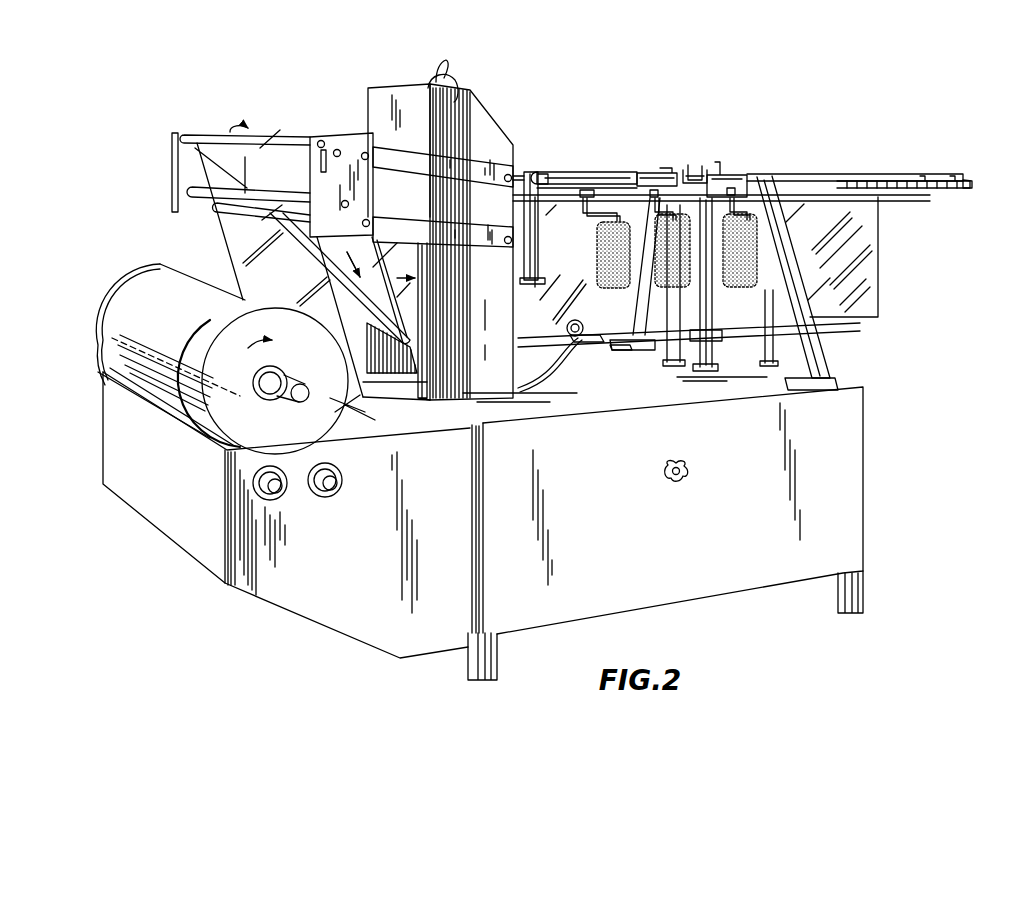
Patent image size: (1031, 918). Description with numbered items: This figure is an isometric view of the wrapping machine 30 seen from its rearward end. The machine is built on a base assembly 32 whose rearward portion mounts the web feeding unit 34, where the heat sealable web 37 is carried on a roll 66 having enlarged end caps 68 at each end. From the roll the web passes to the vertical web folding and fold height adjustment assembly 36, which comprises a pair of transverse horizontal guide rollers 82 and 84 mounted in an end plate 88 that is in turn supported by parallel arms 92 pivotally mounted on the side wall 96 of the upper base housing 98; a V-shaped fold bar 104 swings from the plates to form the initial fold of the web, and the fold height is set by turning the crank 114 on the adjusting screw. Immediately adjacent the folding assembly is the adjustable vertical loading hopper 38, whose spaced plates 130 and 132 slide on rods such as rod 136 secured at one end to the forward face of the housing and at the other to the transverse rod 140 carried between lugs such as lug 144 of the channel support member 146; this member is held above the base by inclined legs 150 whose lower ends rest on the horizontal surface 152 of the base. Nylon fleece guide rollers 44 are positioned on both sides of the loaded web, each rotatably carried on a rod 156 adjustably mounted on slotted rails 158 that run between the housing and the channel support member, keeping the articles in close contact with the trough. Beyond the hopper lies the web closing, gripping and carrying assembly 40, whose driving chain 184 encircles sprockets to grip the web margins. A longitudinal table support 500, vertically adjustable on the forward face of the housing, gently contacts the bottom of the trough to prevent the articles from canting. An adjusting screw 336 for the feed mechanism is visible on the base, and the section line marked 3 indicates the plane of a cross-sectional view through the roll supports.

The wrapping machine 30 is at (882, 356).
The base assembly 32 is at (602, 537).
The web feeding unit 34 is at (149, 258).
The vertical web folding and fold height adjustment assembly 36 is at (338, 122).
The web 37 is at (297, 218).
The adjustable vertical loading hopper 38 is at (578, 168).
The web closing, gripping and carrying assembly 40 is at (851, 170).
The nylon fleece guide rollers 44 is at (620, 272).
The roll 66 is at (135, 307).
The end caps 68 is at (124, 286).
The guide roller 82 is at (200, 205).
The guide roller 84 is at (210, 134).
The end plate 88 is at (172, 166).
The parallel arms 92 is at (440, 204).
The side wall 96 is at (458, 346).
The upper base housing 98 is at (369, 94).
The V-shaped fold bar 104 is at (267, 258).
The crank 114 is at (452, 96).
The hopper plate 130 is at (553, 248).
The hopper plate 132 is at (542, 173).
The rod 136 is at (646, 176).
The transverse rod 140 is at (700, 169).
The lug 144 is at (732, 176).
The channel support member 146 is at (798, 173).
The inclined legs 150 is at (815, 354).
The horizontal surface 152 is at (582, 389).
The rod 156 is at (594, 212).
The rails 158 is at (614, 190).
The driving chain 184 is at (972, 184).
The adjusting screw 336 is at (688, 471).
The longitudinal table support 500 is at (530, 340).
The section line 3- 3 is at (92, 368).